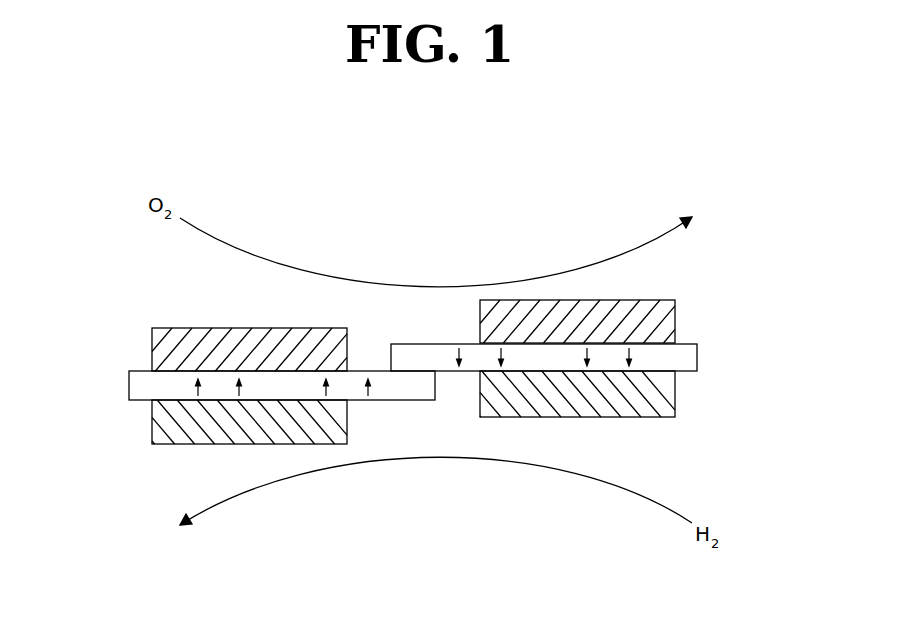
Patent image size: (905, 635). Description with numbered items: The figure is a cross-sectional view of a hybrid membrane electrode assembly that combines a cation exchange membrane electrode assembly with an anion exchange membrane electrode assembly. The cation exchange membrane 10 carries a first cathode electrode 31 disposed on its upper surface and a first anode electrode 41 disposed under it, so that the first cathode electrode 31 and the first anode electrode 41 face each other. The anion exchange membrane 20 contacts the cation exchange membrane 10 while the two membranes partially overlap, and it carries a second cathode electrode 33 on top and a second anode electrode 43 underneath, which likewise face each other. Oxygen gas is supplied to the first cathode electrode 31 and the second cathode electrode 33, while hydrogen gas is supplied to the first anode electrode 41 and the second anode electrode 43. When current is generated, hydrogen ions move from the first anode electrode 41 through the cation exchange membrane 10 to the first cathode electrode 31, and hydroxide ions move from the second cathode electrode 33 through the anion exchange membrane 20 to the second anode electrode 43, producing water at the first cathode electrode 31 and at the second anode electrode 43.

The cation exchange membrane 10 is at (129, 386).
The anion exchange membrane 20 is at (697, 358).
The first cathode electrode 31 is at (152, 350).
The second cathode electrode 33 is at (665, 320).
The first anode electrode 41 is at (152, 435).
The second anode electrode 43 is at (665, 403).